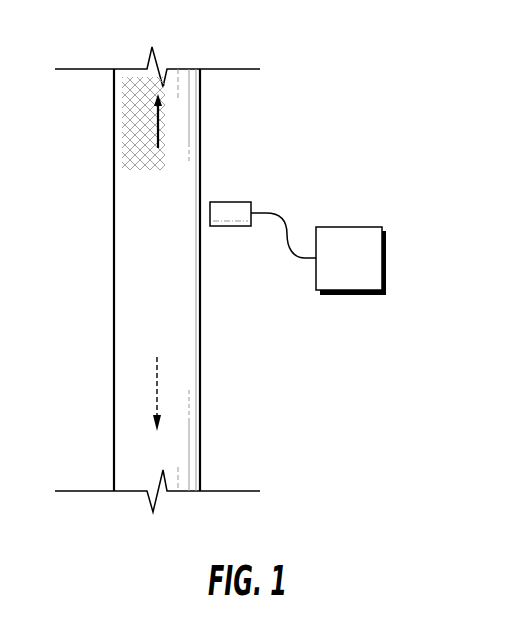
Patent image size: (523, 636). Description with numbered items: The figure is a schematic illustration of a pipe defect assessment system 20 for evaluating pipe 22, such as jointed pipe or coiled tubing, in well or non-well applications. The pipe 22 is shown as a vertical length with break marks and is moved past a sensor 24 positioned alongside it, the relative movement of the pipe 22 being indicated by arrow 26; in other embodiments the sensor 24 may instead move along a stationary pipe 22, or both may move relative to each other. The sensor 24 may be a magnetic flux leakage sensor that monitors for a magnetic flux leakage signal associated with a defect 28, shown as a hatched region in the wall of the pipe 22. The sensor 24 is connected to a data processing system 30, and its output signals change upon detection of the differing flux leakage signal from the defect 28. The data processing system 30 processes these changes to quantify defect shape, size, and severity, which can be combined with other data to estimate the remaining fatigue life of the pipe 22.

The pipe defect assessment system 20 is at (366, 172).
The pipe 22 is at (164, 293).
The sensor 24 is at (237, 208).
The arrow 26 is at (155, 390).
The defect 28 is at (143, 131).
The data processing system 30 is at (363, 273).